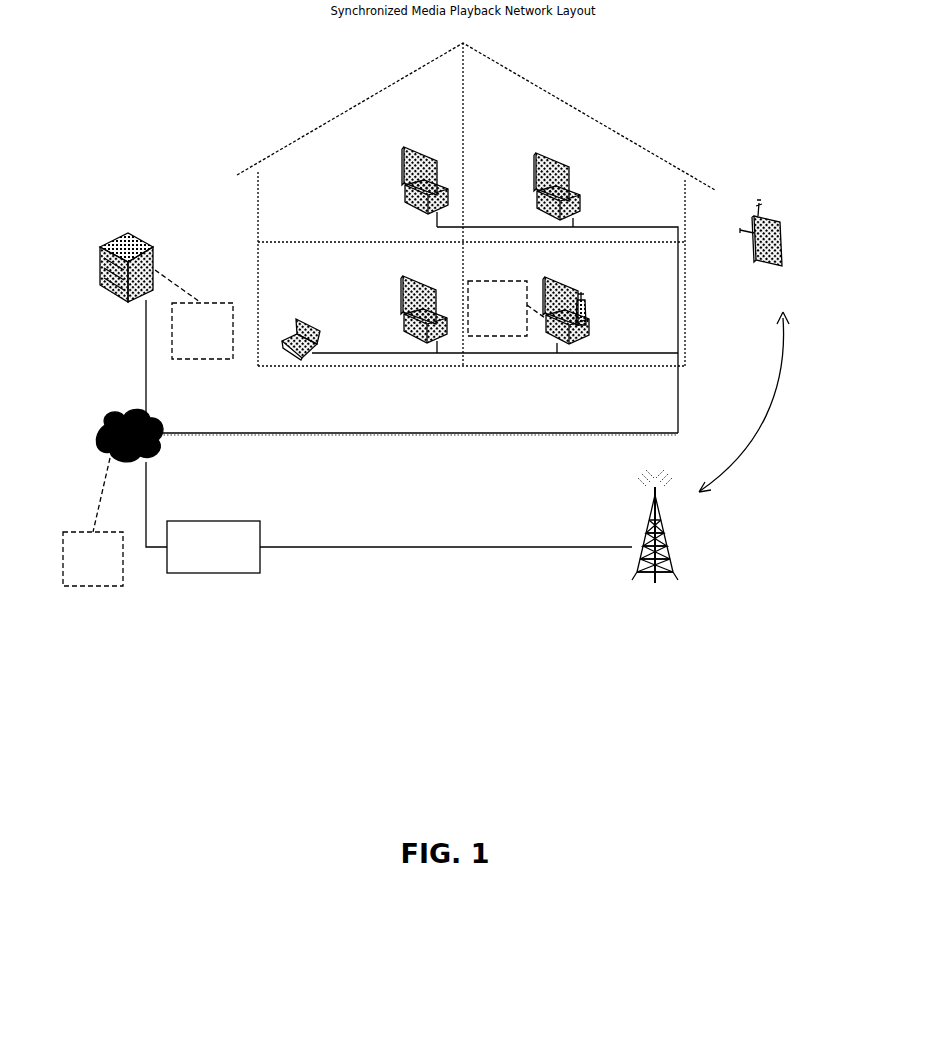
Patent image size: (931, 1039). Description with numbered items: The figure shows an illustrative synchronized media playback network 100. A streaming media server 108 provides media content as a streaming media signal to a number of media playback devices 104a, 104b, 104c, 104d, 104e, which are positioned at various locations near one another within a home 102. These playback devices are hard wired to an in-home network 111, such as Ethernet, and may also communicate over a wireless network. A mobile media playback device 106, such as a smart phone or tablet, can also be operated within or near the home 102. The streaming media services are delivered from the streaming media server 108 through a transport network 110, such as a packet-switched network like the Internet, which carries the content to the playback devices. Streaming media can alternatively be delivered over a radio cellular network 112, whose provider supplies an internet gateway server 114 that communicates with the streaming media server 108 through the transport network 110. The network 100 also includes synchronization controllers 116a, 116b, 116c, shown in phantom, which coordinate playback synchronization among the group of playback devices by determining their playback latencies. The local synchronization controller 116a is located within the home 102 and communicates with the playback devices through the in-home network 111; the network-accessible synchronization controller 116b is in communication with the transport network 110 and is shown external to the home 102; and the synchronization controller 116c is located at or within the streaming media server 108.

The synchronized media playback network 100 is at (440, 438).
The home 102 is at (572, 105).
The media playback device 104a is at (585, 314).
The media playback device 104b is at (575, 193).
The media playback device 104c is at (410, 183).
The media playback device 104d is at (403, 300).
The media playback device 104e is at (318, 339).
The mobile media playback device 106 is at (770, 214).
The streaming media server 108 is at (143, 241).
The transport network 110 is at (128, 415).
The in-home network 111 is at (644, 369).
The radio cellular network 112 is at (643, 576).
The internet gateway server 114 is at (399, 547).
The synchronization controller 116a is at (506, 308).
The synchronization controller 116b is at (93, 522).
The synchronization controller 116c is at (194, 314).